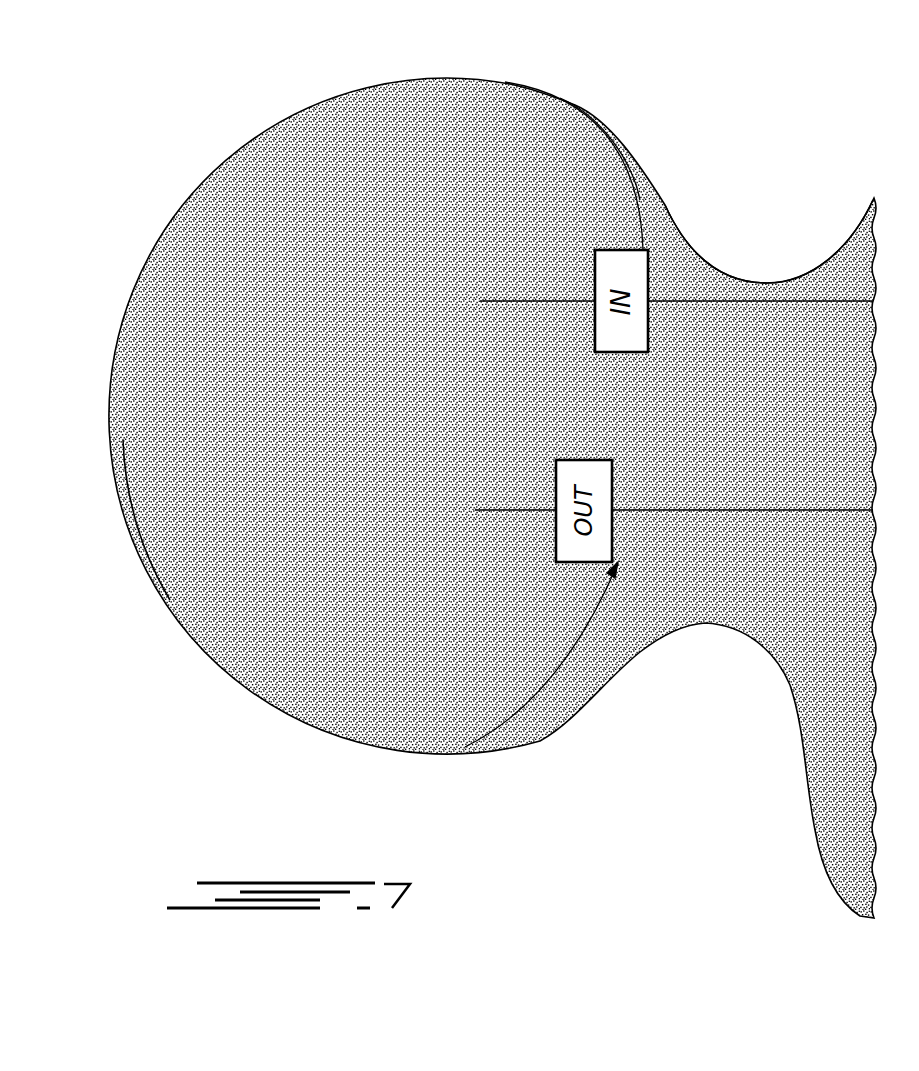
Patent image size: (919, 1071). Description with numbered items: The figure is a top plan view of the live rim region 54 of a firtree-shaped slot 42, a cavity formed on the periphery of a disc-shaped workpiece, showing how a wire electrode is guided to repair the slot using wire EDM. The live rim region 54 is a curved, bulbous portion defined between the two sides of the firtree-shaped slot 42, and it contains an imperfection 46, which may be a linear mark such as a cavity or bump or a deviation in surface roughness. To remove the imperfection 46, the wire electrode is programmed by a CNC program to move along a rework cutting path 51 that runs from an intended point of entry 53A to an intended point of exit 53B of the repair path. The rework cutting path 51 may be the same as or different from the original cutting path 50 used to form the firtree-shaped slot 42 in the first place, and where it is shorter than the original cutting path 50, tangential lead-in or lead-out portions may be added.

The live rim region 54 is at (140, 252).
The imperfection 46 is at (147, 557).
The original cutting path 50 is at (663, 200).
The firtree-shaped slot 42 is at (767, 446).
The rework cutting path 51 is at (627, 158).
The intended point of entry 53A is at (462, 752).
The intended point of exit 53B is at (510, 83).